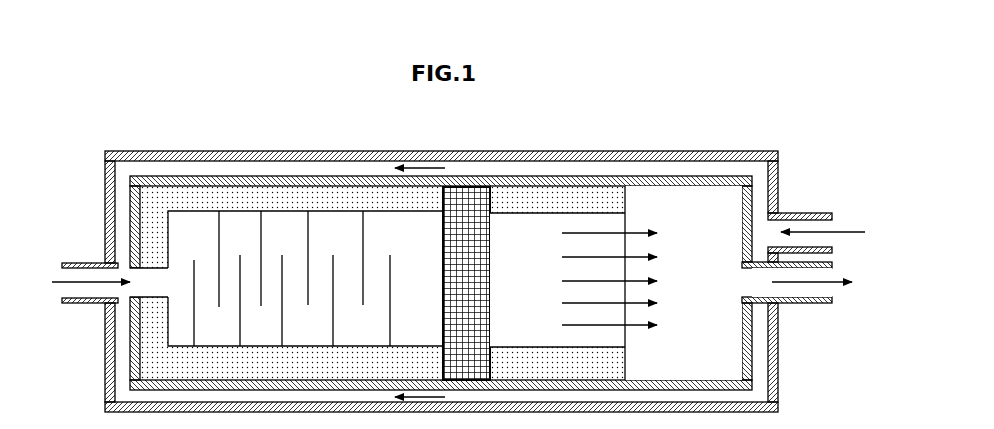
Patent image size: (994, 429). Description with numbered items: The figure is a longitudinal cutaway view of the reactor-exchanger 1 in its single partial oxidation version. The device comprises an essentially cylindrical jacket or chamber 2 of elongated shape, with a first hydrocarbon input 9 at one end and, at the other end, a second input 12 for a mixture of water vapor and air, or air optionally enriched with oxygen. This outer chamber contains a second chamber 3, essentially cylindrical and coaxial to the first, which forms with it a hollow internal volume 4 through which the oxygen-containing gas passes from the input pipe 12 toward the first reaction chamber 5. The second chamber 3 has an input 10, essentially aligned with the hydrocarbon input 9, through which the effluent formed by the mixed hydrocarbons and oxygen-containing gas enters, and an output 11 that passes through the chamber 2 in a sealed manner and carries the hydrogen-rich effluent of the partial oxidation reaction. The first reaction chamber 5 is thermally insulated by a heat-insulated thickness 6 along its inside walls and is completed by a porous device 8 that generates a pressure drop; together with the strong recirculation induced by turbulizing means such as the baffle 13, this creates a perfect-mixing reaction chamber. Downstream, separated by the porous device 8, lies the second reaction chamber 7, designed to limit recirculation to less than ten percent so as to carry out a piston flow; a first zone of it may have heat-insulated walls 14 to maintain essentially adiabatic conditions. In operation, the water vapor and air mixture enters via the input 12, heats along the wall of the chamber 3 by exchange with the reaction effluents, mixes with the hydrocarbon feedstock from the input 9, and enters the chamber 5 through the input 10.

The reactor-exchanger 1 is at (461, 238).
The jacket or chamber 2 is at (108, 182).
The second chamber 3 is at (242, 182).
The hollow internal volume 4 is at (203, 170).
The first reaction chamber 5 is at (192, 254).
The heat-insulated thickness 6 is at (300, 195).
The second reaction chamber 7 is at (707, 283).
The porous device 8 is at (462, 204).
The hydrocarbon input 9 is at (99, 275).
The input of the second chamber 10 is at (157, 283).
The output of the second chamber 11 is at (810, 286).
The second input 12 is at (806, 224).
The baffle 13 is at (362, 238).
The heat-insulated walls 14 is at (545, 197).